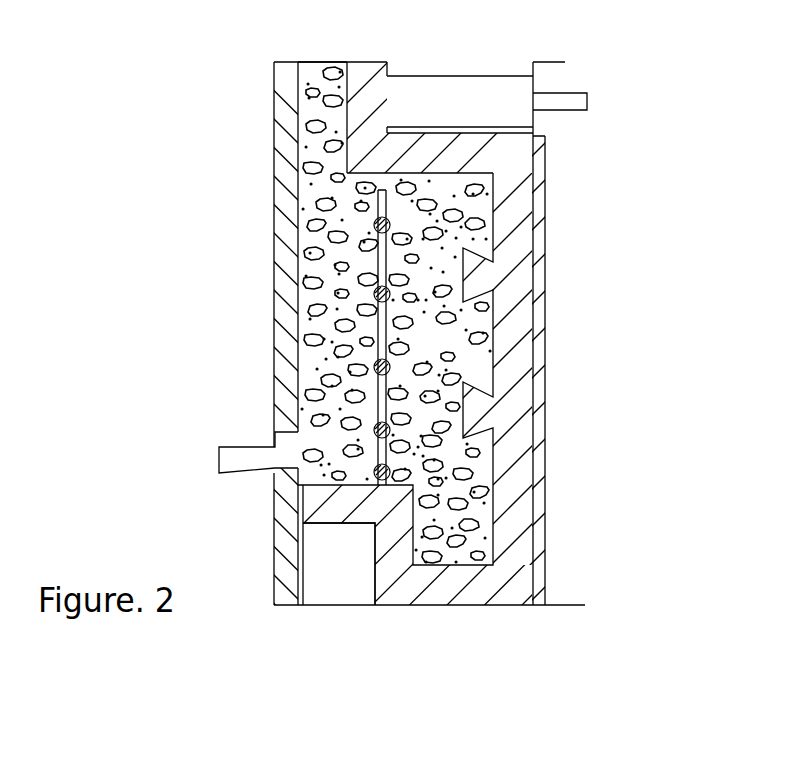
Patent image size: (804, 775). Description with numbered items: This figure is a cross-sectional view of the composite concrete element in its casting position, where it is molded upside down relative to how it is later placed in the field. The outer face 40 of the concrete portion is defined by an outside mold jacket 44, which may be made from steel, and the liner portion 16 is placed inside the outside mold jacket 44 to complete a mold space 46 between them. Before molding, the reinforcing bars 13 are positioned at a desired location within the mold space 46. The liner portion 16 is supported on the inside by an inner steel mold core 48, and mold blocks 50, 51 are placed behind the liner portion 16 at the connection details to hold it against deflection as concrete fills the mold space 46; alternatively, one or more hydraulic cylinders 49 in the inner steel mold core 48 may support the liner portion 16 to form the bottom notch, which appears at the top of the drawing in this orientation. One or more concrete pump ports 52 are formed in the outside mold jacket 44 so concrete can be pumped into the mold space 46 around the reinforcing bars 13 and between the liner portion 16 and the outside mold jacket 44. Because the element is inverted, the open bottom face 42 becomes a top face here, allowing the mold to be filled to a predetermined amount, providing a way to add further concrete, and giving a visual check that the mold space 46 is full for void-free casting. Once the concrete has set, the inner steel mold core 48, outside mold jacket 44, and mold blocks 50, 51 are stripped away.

The reinforcing bars 13 is at (380, 294).
The liner portion 16 is at (362, 76).
The outer face 40 is at (298, 146).
The open bottom face 42 is at (323, 62).
The outside mold jacket 44 is at (283, 198).
The mold space 46 is at (437, 348).
The inner steel mold core 48 is at (538, 438).
The hydraulic cylinders 49 is at (568, 110).
The mold block 50 is at (345, 575).
The mold block 51 is at (475, 105).
The concrete pump ports 52 is at (248, 465).